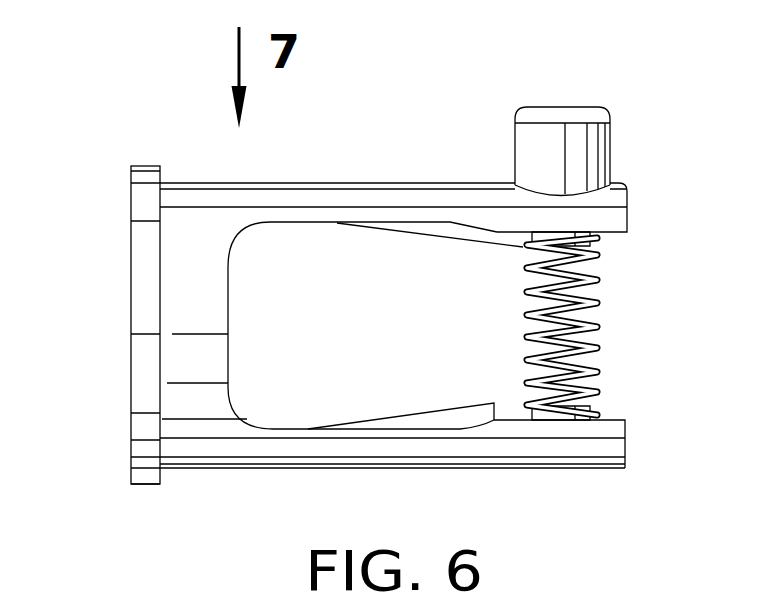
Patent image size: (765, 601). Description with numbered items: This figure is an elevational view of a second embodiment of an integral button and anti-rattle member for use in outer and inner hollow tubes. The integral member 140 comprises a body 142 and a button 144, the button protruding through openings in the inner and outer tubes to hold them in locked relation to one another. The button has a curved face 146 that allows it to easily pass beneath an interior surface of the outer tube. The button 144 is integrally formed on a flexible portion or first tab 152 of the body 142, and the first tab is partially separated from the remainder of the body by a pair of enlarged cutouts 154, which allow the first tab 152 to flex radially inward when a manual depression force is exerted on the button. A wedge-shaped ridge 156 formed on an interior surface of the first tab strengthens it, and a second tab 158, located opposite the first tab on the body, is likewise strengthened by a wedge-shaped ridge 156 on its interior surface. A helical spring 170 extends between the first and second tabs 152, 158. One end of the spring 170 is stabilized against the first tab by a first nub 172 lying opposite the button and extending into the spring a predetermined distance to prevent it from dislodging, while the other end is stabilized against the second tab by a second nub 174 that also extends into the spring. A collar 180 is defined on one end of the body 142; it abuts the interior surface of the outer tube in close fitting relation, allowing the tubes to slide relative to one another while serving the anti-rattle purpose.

The integral member 140 is at (140, 135).
The body 142 is at (169, 349).
The button 144 is at (632, 102).
The curved face 146 is at (542, 105).
The first tab 152 is at (403, 183).
The enlarged cutouts 154 is at (293, 397).
The wedge-shaped ridge 156 is at (420, 253).
The second tab 158 is at (629, 474).
The helical spring 170 is at (626, 323).
The first nub 172 is at (595, 243).
The second nub 174 is at (595, 412).
The collar 180 is at (114, 499).